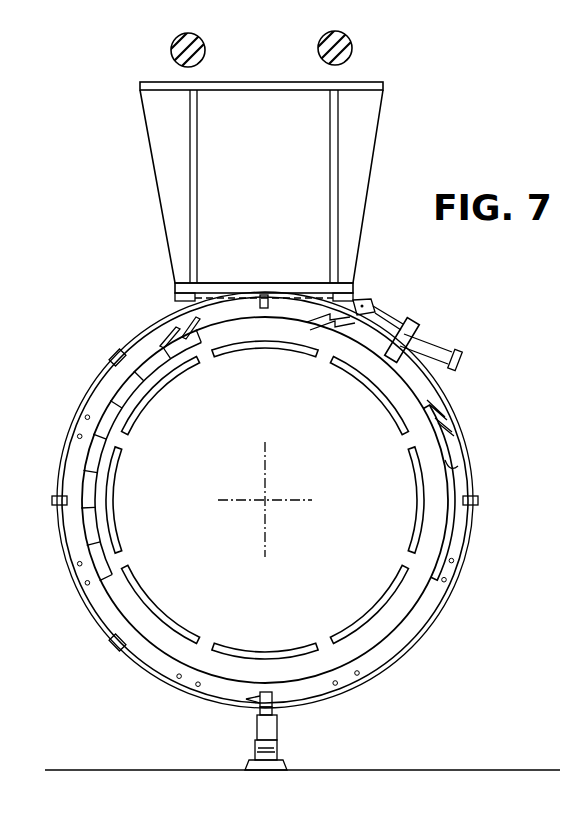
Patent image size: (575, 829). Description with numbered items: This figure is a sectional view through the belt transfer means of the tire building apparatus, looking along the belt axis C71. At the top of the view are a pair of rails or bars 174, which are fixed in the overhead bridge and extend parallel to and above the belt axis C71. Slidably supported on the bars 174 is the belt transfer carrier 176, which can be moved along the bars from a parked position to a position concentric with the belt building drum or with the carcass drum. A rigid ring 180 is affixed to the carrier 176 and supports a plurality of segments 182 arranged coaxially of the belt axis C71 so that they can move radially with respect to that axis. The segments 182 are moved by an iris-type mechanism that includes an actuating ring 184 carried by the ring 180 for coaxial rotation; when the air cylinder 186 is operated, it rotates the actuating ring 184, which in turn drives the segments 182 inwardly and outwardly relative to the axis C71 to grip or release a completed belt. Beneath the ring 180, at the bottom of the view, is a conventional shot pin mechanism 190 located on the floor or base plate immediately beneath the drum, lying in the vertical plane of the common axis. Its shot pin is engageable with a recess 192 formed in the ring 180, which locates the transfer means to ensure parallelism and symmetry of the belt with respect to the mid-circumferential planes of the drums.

The rails or bars 174 is at (321, 37).
The belt transfer carrier 176 is at (370, 173).
The rigid ring 180 is at (451, 401).
The segments 182 is at (103, 432).
The actuating ring 184 is at (458, 466).
The air cylinder 186 is at (437, 343).
The shot pin mechanism 190 is at (262, 726).
The recess 192 is at (248, 698).
The belt axis C71 is at (265, 499).